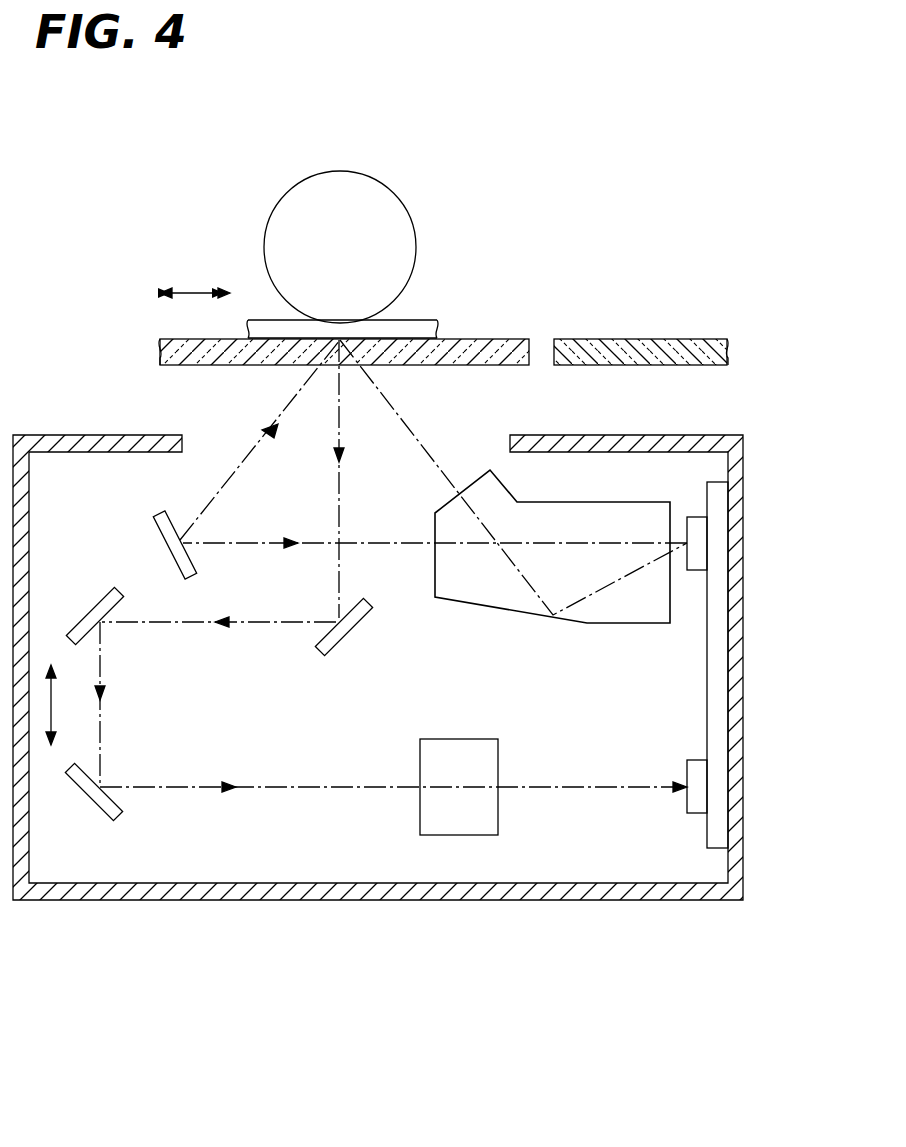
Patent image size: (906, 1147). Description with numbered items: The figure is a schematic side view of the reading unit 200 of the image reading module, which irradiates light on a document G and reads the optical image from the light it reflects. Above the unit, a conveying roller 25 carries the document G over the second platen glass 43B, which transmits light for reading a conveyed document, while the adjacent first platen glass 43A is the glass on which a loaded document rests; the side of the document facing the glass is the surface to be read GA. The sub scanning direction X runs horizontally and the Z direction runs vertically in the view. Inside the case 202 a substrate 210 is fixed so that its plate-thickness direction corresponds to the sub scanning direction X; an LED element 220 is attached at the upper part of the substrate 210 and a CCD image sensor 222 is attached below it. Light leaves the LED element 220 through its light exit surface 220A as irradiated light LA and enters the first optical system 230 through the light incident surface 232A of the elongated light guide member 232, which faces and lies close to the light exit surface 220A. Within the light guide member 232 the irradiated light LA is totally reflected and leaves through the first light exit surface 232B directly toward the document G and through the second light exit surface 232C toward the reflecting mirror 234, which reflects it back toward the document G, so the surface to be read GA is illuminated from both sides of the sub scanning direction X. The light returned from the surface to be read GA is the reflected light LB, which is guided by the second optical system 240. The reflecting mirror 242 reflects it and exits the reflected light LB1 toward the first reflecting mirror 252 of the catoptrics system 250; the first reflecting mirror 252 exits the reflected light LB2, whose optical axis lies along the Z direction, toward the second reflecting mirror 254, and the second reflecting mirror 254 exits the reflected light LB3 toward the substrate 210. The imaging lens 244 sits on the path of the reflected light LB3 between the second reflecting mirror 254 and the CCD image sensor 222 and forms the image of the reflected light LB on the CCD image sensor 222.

The conveying roller 25 is at (346, 172).
The surface to be read GA is at (394, 343).
The document G is at (412, 325).
The second platen glass 43B is at (503, 348).
The first platen glass 43A is at (651, 350).
The sub scanning direction X is at (196, 292).
The Z direction Z is at (53, 702).
The first optical system 230 is at (188, 495).
The reflecting mirror 234 is at (160, 534).
The first reflecting mirror 252 is at (97, 600).
The reflecting mirror 242 is at (350, 636).
The second reflecting mirror 254 is at (87, 802).
The catoptrics system 250 is at (122, 704).
The second optical system 240 is at (188, 818).
The imaging lens 244 is at (460, 750).
The light guide member 232 is at (593, 617).
The light incident surface 232A is at (672, 600).
The first light exit surface 232B is at (470, 482).
The second light exit surface 232C is at (434, 572).
The case 202 is at (726, 490).
The substrate 210 is at (720, 592).
The LED element 220 is at (698, 543).
The light exit surface 220A is at (684, 525).
The CCD image sensor 222 is at (698, 787).
The reading unit 200 is at (395, 899).
The irradiated light LA is at (290, 394).
The reflected light LB is at (340, 500).
The reflected light LB1 is at (272, 626).
The reflected light LB2 is at (103, 746).
The reflected light LB3 is at (320, 786).